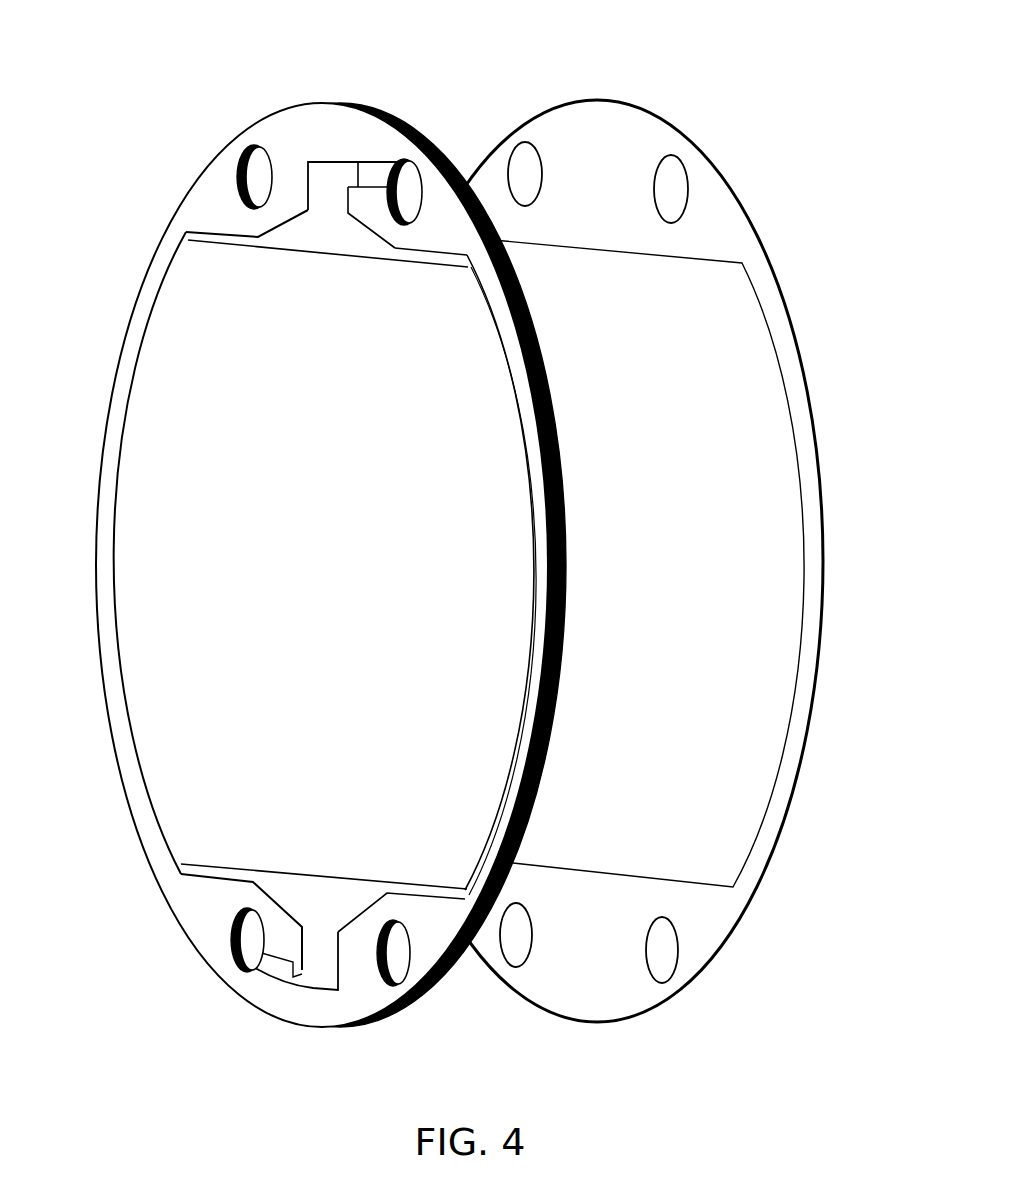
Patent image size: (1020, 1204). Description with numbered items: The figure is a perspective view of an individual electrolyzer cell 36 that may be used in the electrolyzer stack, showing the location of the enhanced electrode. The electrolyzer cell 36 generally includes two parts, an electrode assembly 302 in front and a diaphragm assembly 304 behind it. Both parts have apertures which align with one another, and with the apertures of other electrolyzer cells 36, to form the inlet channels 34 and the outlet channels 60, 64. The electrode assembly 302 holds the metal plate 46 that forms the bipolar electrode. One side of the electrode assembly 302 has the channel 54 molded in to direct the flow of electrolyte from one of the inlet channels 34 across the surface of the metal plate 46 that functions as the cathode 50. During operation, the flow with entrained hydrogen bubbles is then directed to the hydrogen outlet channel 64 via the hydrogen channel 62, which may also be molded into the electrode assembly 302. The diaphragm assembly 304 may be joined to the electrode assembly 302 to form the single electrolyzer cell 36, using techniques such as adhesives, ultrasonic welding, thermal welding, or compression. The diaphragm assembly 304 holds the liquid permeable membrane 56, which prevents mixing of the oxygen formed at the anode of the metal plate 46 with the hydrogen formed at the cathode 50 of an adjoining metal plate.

The electrolyzer cell 36 is at (381, 566).
The inlet channels 34 is at (252, 147).
The hydrogen channel 62 is at (334, 173).
The hydrogen outlet channel 64 is at (411, 168).
The diaphragm assembly 304 is at (622, 103).
The outlet channels 60 is at (683, 172).
The electrode assembly 302 is at (147, 258).
The metal plate 46 is at (165, 412).
The liquid permeable membrane 56 is at (740, 355).
The cathode 50 is at (150, 713).
The channel 54 is at (318, 970).